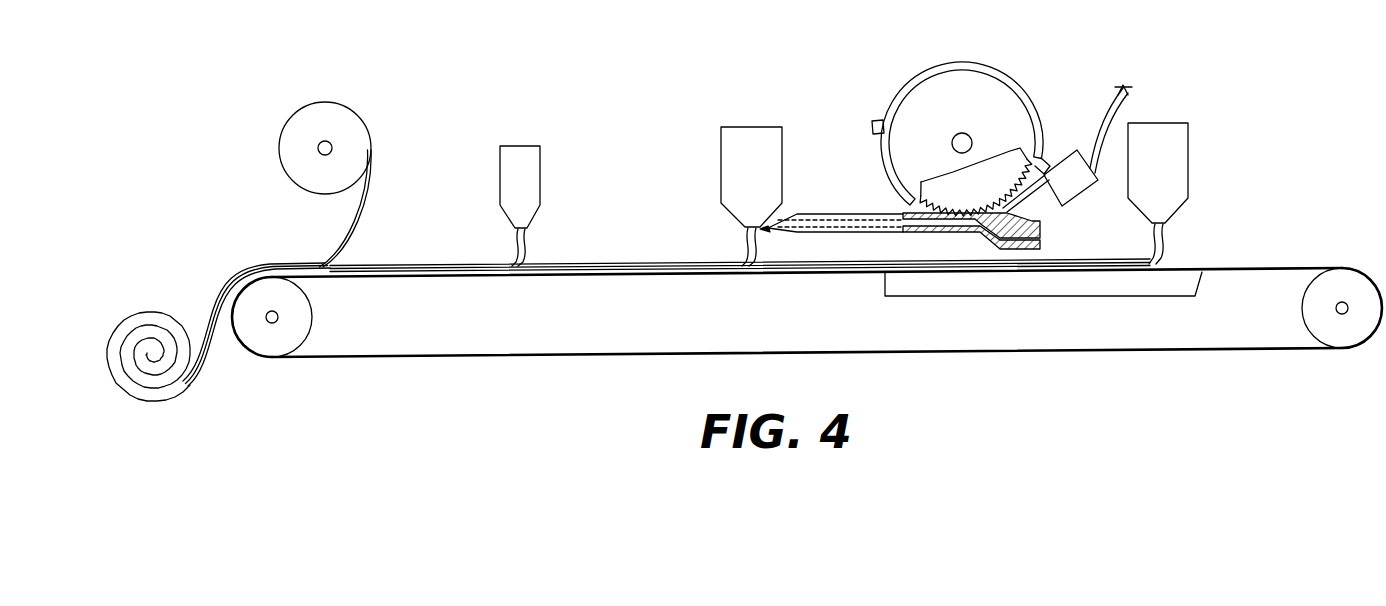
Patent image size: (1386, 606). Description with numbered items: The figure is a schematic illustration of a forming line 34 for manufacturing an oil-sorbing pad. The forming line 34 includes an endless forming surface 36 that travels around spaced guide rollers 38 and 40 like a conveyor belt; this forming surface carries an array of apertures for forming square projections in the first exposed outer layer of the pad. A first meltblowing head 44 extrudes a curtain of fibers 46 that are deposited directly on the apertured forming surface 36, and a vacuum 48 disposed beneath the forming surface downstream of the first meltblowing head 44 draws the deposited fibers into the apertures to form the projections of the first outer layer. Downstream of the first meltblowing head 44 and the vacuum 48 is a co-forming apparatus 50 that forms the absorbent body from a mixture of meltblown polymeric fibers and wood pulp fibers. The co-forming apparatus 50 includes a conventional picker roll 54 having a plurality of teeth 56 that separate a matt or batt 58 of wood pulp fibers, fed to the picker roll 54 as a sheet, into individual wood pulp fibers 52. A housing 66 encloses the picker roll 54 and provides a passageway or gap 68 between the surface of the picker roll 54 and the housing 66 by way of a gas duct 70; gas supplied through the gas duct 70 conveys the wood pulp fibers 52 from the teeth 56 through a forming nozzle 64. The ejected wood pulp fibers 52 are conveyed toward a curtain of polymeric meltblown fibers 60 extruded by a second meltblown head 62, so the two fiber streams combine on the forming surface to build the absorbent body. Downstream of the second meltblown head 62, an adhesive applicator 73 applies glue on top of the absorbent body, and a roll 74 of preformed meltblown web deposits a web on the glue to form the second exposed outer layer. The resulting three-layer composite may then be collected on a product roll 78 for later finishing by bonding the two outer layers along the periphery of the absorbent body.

The forming line 34 is at (631, 91).
The endless forming surface 36 is at (583, 356).
The guide roller 38 is at (1310, 297).
The guide roller 40 is at (273, 337).
The first meltblowing head 44 is at (1177, 150).
The curtain of fibers 46 is at (1163, 240).
The vacuum 48 is at (1003, 293).
The co-forming apparatus 50 is at (968, 52).
The wood pulp fibers 52 is at (770, 231).
The picker roll 54 is at (992, 197).
The teeth 56 is at (1012, 186).
The matt or batt of wood pulp fibers 58 is at (1130, 105).
The curtain of polymeric meltblown fibers 60 is at (742, 248).
The second meltblown head 62 is at (743, 138).
The forming nozzle 64 is at (795, 217).
The housing 66 is at (893, 93).
The passageway or gap 68 is at (942, 233).
The gas duct 70 is at (1040, 245).
The adhesive applicator 73 is at (530, 170).
The roll of preformed meltblown web 74 is at (292, 143).
The product roll 78 is at (148, 302).